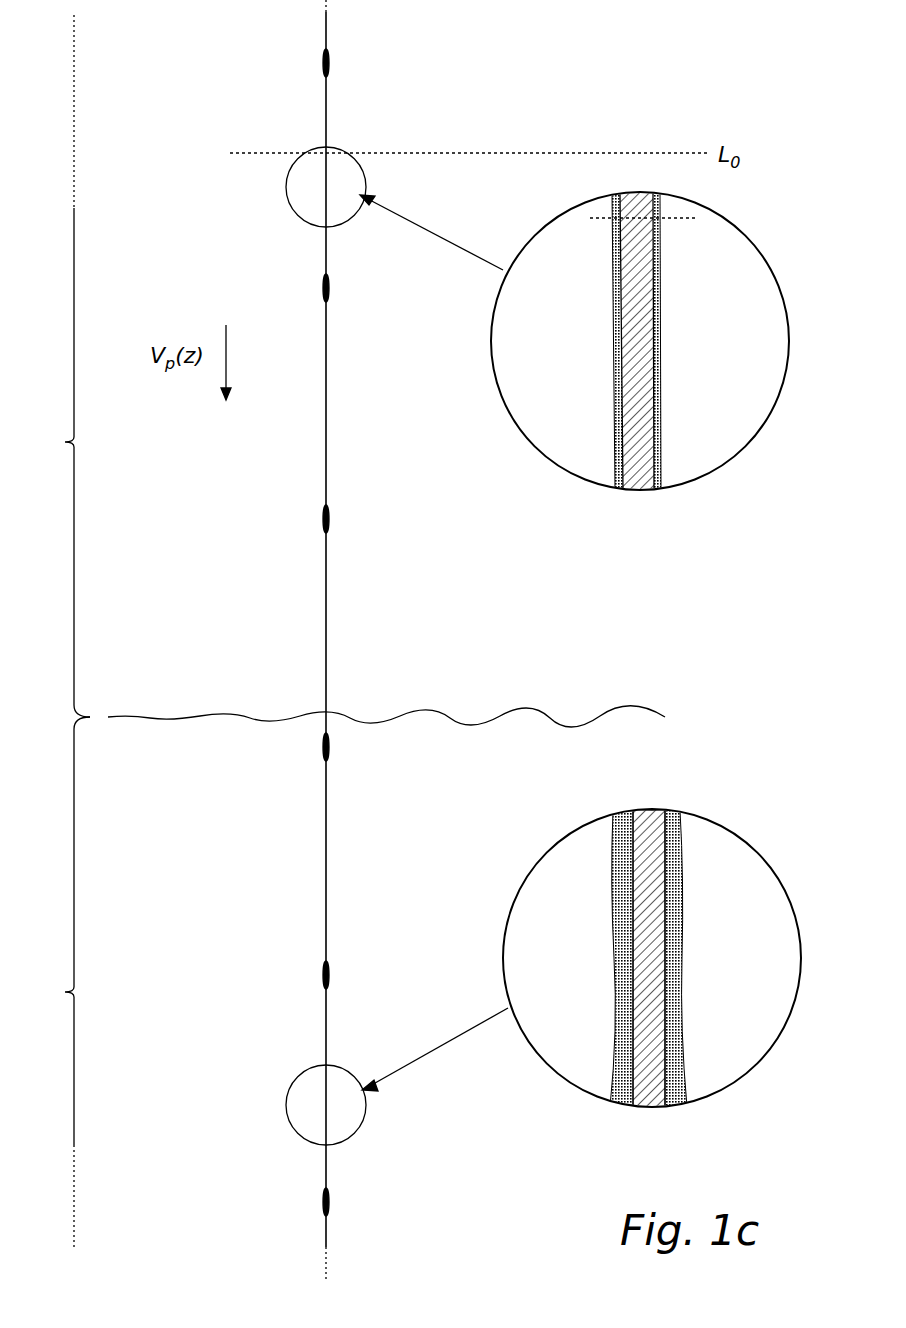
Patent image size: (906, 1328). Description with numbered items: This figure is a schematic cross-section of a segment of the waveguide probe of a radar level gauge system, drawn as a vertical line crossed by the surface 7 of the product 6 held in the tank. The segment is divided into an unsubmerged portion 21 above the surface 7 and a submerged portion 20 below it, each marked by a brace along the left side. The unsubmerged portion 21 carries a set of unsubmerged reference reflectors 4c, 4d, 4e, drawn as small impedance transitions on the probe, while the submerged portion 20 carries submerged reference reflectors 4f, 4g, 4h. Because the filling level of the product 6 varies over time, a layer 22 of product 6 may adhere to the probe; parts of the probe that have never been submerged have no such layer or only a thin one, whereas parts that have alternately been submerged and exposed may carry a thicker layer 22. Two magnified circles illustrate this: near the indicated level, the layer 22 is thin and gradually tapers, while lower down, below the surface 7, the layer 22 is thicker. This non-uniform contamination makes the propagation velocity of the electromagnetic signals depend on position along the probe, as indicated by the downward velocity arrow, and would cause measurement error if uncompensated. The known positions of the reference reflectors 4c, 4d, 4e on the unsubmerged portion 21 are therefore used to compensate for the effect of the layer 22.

The reference reflector 4c is at (328, 67).
The reference reflector 4d is at (328, 296).
The reference reflector 4e is at (328, 525).
The submerged reference reflector 4f is at (328, 752).
The submerged reference reflector 4g is at (328, 982).
The submerged reference reflector 4h is at (328, 1210).
The product 6 is at (207, 960).
The surface 7 is at (547, 716).
The submerged portion 20 is at (59, 931).
The unsubmerged portion 21 is at (59, 462).
The layer 22 is at (661, 328).